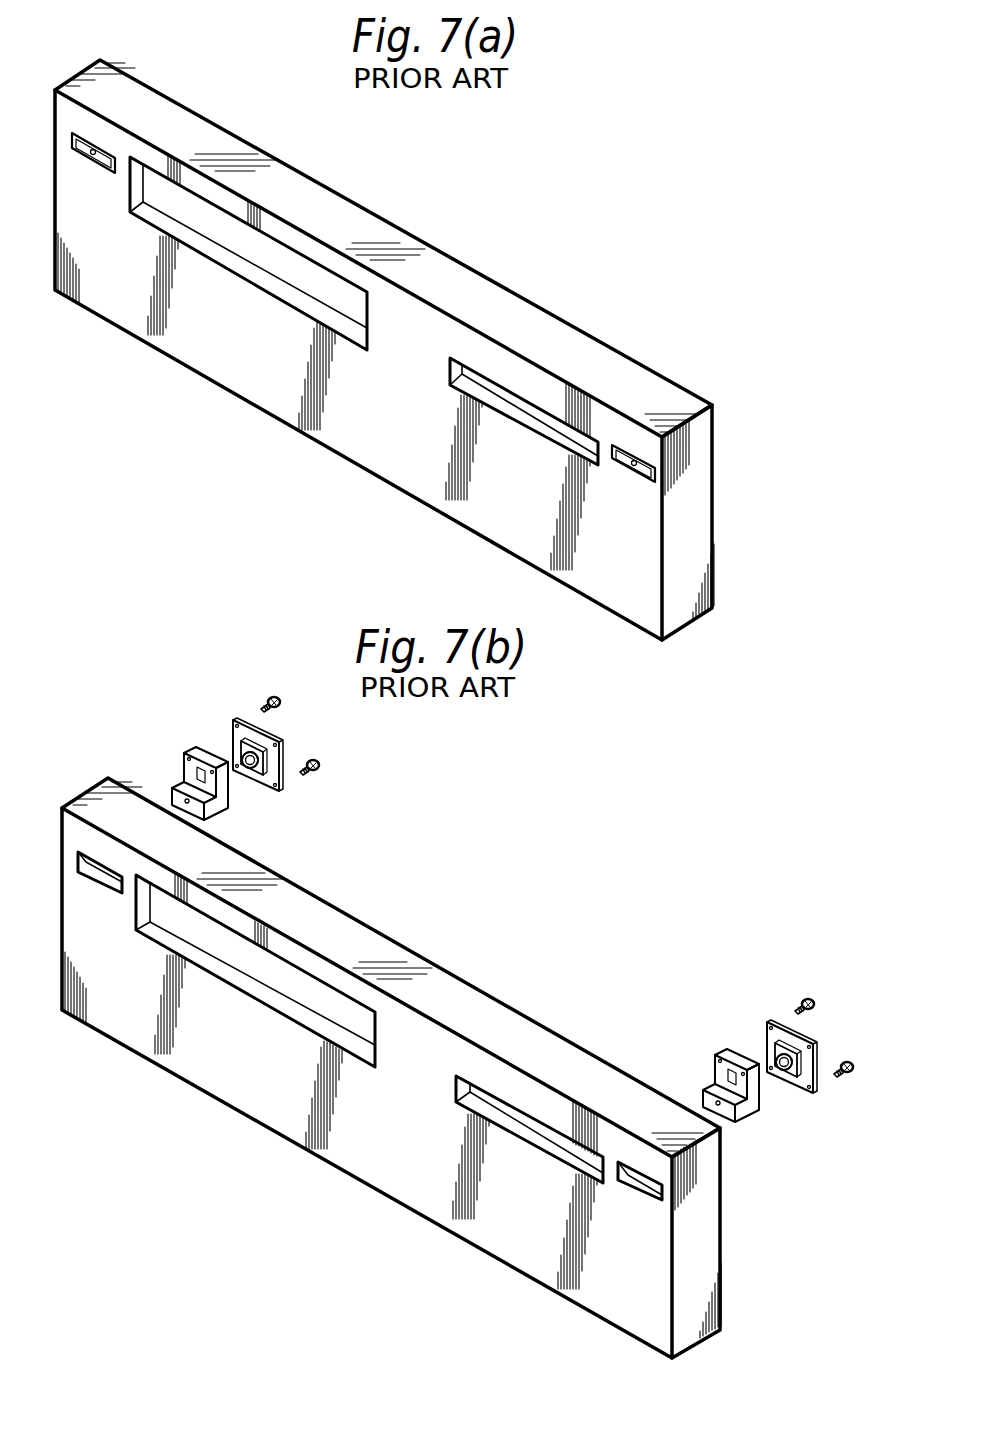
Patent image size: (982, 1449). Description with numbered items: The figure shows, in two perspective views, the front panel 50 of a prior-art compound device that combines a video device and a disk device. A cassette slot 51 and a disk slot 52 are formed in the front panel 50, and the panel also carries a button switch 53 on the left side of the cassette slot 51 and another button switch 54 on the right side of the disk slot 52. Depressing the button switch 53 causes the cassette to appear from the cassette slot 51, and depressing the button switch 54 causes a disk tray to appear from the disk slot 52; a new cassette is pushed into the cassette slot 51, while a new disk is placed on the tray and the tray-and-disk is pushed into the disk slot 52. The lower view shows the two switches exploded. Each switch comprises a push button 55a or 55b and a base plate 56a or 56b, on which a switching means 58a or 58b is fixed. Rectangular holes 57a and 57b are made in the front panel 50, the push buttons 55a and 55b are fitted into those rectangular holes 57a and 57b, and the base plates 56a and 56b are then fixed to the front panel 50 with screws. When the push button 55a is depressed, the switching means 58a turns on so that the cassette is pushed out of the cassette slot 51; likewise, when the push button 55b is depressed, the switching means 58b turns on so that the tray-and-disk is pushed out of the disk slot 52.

In FIG. 7A, the front panel 50 is at (451, 242).
In FIG. 7B, the front panel 50 is at (272, 1130).
In FIG. 7A, the cassette slot 51 is at (282, 272).
In FIG. 7A, the disk slot 52 is at (550, 422).
In FIG. 7A, the button switch 53 is at (102, 173).
In FIG. 7A, the button switch 54 is at (637, 477).
In FIG. 7B, the push button 55a is at (182, 770).
In FIG. 7B, the push button 55b is at (715, 1073).
In FIG. 7B, the base plate 56a is at (274, 736).
In FIG. 7B, the base plate 56b is at (782, 1021).
In FIG. 7B, the rectangular hole 57a is at (112, 893).
In FIG. 7B, the rectangular hole 57b is at (652, 1198).
In FIG. 7B, the switching means 58a is at (249, 778).
In FIG. 7B, the switching means 58b is at (766, 1060).